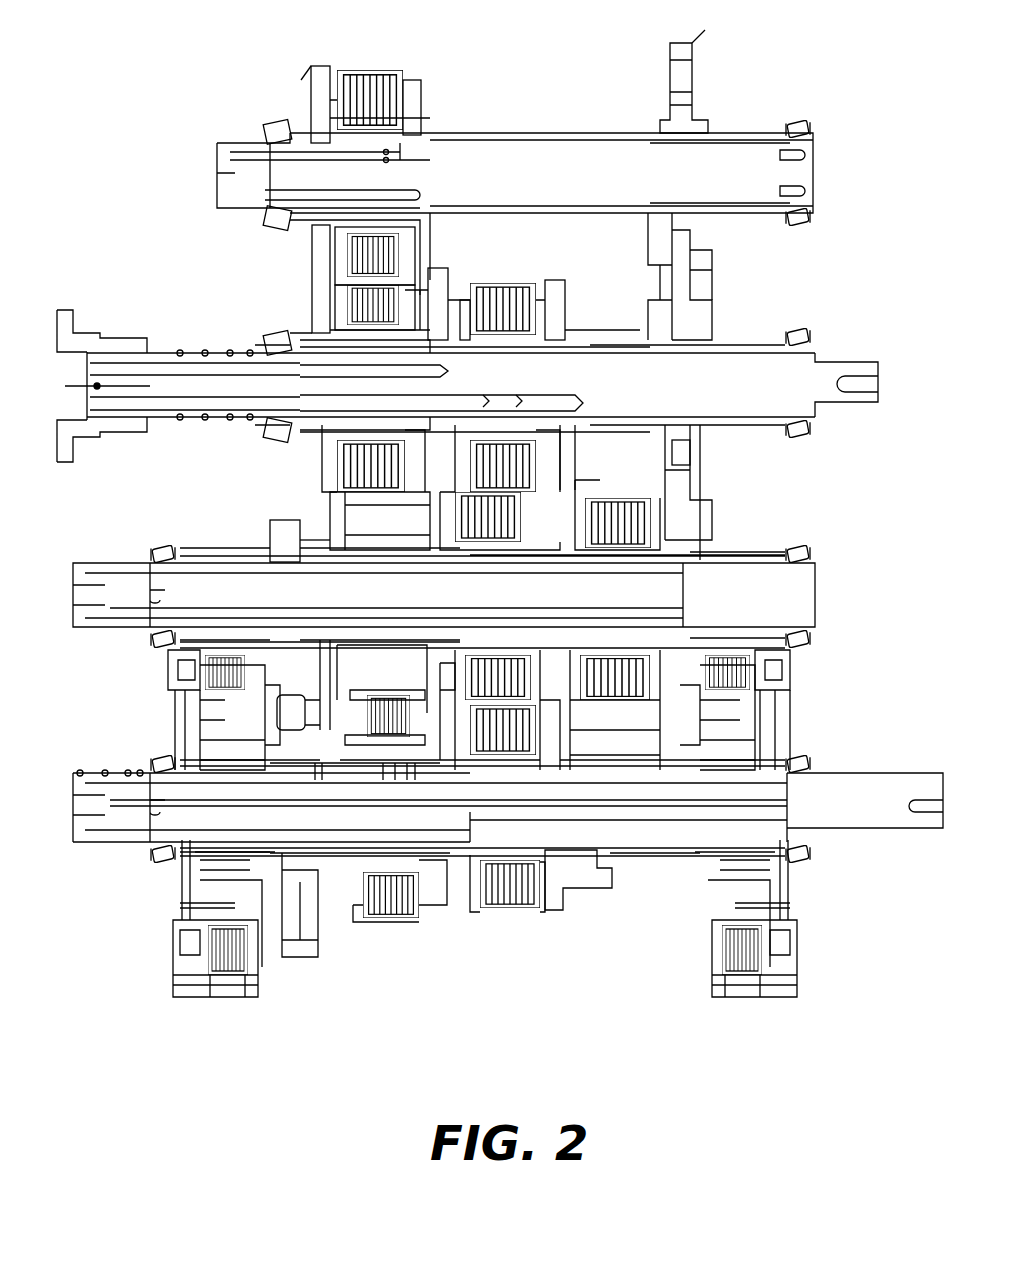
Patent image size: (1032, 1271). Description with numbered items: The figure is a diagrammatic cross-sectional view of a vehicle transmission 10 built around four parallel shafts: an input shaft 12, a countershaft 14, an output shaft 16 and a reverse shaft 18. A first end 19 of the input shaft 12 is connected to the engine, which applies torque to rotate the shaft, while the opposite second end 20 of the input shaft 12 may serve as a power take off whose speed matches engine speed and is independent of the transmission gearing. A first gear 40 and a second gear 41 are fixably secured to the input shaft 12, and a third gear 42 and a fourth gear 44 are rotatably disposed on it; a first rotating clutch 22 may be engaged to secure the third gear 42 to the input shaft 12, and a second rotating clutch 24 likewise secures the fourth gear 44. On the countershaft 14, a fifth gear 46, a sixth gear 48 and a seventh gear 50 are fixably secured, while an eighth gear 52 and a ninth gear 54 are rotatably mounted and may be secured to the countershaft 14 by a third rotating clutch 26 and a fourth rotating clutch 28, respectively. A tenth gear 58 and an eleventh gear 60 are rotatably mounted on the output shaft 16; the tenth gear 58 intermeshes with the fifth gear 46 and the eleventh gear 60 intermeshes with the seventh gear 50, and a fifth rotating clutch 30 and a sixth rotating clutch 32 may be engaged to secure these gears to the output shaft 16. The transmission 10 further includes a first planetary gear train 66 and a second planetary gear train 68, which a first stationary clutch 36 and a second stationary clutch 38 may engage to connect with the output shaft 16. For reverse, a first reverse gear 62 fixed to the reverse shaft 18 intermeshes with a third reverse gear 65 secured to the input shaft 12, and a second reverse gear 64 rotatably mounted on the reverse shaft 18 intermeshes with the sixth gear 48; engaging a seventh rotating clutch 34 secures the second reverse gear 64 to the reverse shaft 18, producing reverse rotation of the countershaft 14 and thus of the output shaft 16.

The vehicle transmission 10 is at (152, 112).
The input shaft 12 is at (175, 378).
The countershaft 14 is at (108, 562).
The output shaft 16 is at (838, 790).
The reverse shaft 18 is at (538, 160).
The first end 19 is at (80, 333).
The second end 20 is at (852, 362).
The first rotating clutch 22 is at (347, 275).
The second rotating clutch 24 is at (505, 283).
The third rotating clutch 26 is at (330, 520).
The fourth rotating clutch 28 is at (605, 498).
The fifth rotating clutch 30 is at (375, 918).
The sixth rotating clutch 32 is at (503, 908).
The seventh rotating clutch 34 is at (362, 72).
The first stationary clutch 36 is at (218, 965).
The second stationary clutch 38 is at (745, 965).
The first gear 40 is at (440, 293).
The second gear 41 is at (648, 290).
The third gear 42 is at (312, 300).
The fourth gear 44 is at (565, 310).
The fifth gear 46 is at (270, 545).
The sixth gear 48 is at (322, 486).
The seventh gear 50 is at (560, 500).
The eighth gear 52 is at (440, 528).
The ninth gear 54 is at (690, 522).
The tenth gear 58 is at (293, 957).
The eleventh gear 60 is at (560, 910).
The first reverse gear 62 is at (692, 60).
The second reverse gear 64 is at (322, 66).
The third reverse gear 65 is at (690, 332).
The first planetary gear train 66 is at (155, 728).
The second planetary gear train 68 is at (805, 727).